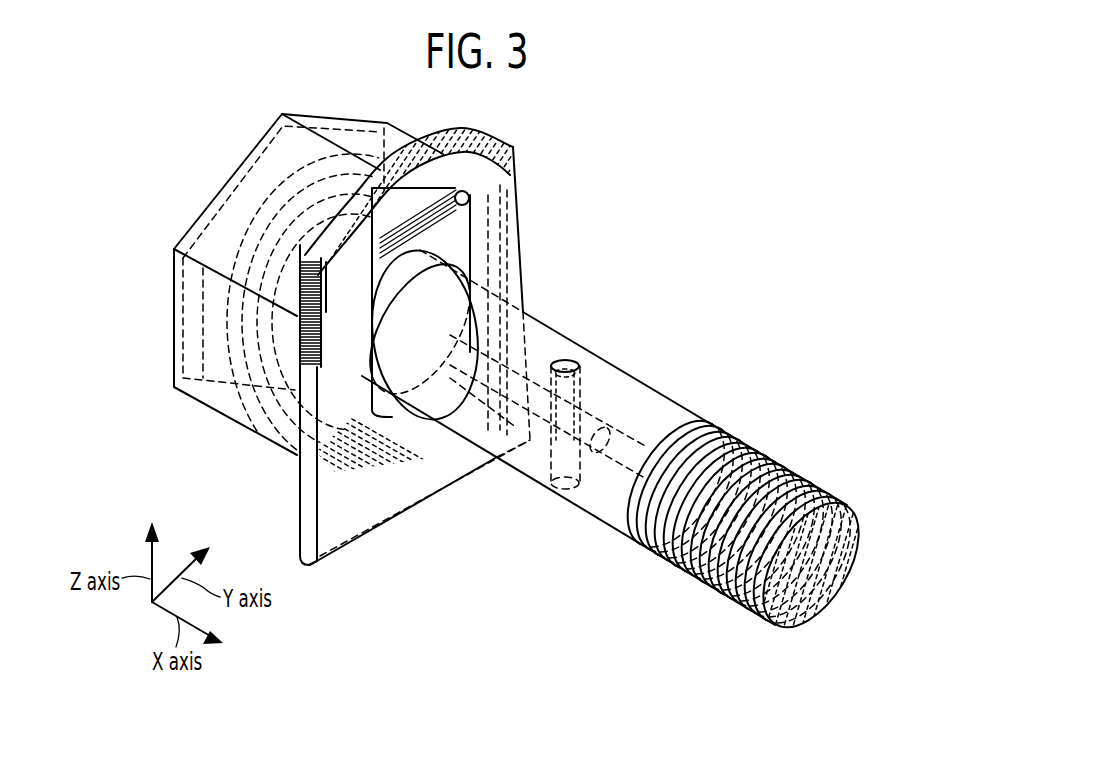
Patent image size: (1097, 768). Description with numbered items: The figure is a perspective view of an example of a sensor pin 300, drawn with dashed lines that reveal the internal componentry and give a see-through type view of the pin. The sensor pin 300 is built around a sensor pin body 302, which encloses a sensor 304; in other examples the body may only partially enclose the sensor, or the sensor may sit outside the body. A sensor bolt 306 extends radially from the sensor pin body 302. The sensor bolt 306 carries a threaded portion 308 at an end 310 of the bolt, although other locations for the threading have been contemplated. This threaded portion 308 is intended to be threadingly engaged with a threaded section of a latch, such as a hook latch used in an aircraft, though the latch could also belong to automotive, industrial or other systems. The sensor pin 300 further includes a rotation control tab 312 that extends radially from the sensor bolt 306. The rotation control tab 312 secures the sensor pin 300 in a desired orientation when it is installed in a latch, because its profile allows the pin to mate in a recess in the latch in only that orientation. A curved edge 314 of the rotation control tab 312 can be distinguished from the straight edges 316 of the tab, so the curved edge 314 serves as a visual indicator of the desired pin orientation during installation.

The sensor pin 300 is at (842, 228).
The sensor pin body 302 is at (122, 183).
The sensor 304 is at (272, 378).
The sensor bolt 306 is at (686, 374).
The threaded portion 308 is at (884, 523).
The end of the bolt 310 is at (872, 596).
The rotation control tab 312 is at (255, 494).
The curved edge 314 is at (427, 138).
The straight edges 316 is at (518, 220).